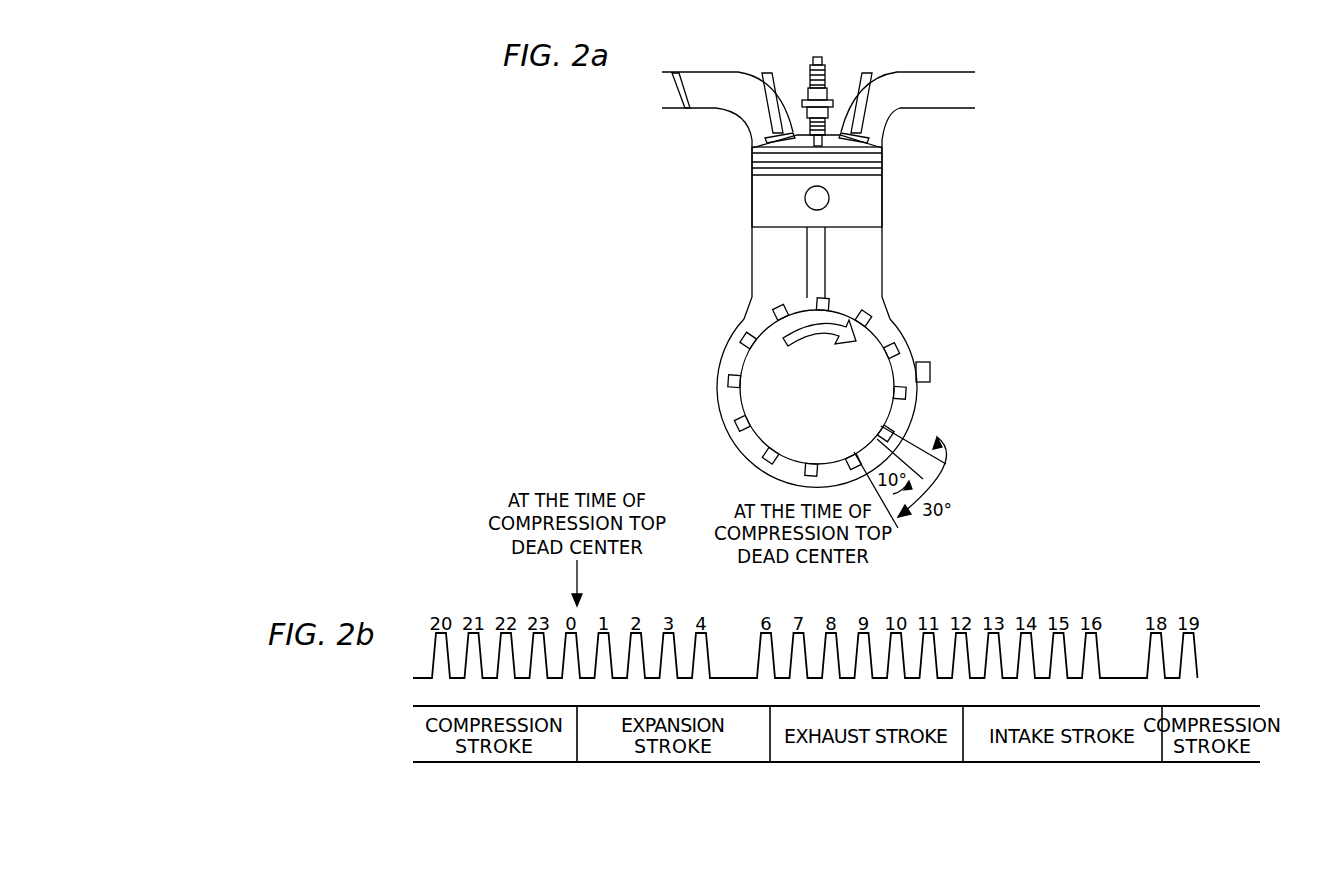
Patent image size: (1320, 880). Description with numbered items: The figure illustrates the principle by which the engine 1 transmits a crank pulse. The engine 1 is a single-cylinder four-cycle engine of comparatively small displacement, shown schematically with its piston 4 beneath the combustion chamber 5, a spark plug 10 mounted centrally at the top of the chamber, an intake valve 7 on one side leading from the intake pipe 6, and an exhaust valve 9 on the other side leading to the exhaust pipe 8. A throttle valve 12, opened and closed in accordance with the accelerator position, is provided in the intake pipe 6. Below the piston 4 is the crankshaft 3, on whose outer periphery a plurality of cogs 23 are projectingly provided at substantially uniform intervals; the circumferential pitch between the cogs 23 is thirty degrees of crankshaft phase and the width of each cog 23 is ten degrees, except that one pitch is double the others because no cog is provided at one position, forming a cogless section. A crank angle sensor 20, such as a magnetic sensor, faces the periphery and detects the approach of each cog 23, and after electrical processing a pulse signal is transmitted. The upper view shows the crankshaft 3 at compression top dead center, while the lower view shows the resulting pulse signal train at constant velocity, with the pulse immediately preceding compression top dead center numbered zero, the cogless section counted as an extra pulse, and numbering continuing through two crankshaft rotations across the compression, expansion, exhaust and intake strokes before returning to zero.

The engine 1 is at (708, 268).
The crankshaft 3 is at (760, 368).
The piston 4 is at (778, 221).
The combustion chamber 5 is at (882, 148).
The intake pipe 6 is at (715, 110).
The intake valve 7 is at (767, 73).
The exhaust pipe 8 is at (957, 110).
The exhaust valve 9 is at (870, 73).
The spark plug 10 is at (822, 63).
The throttle valve 12 is at (685, 108).
The crank angle sensor 20 is at (932, 368).
The cogs 23 is at (775, 310).